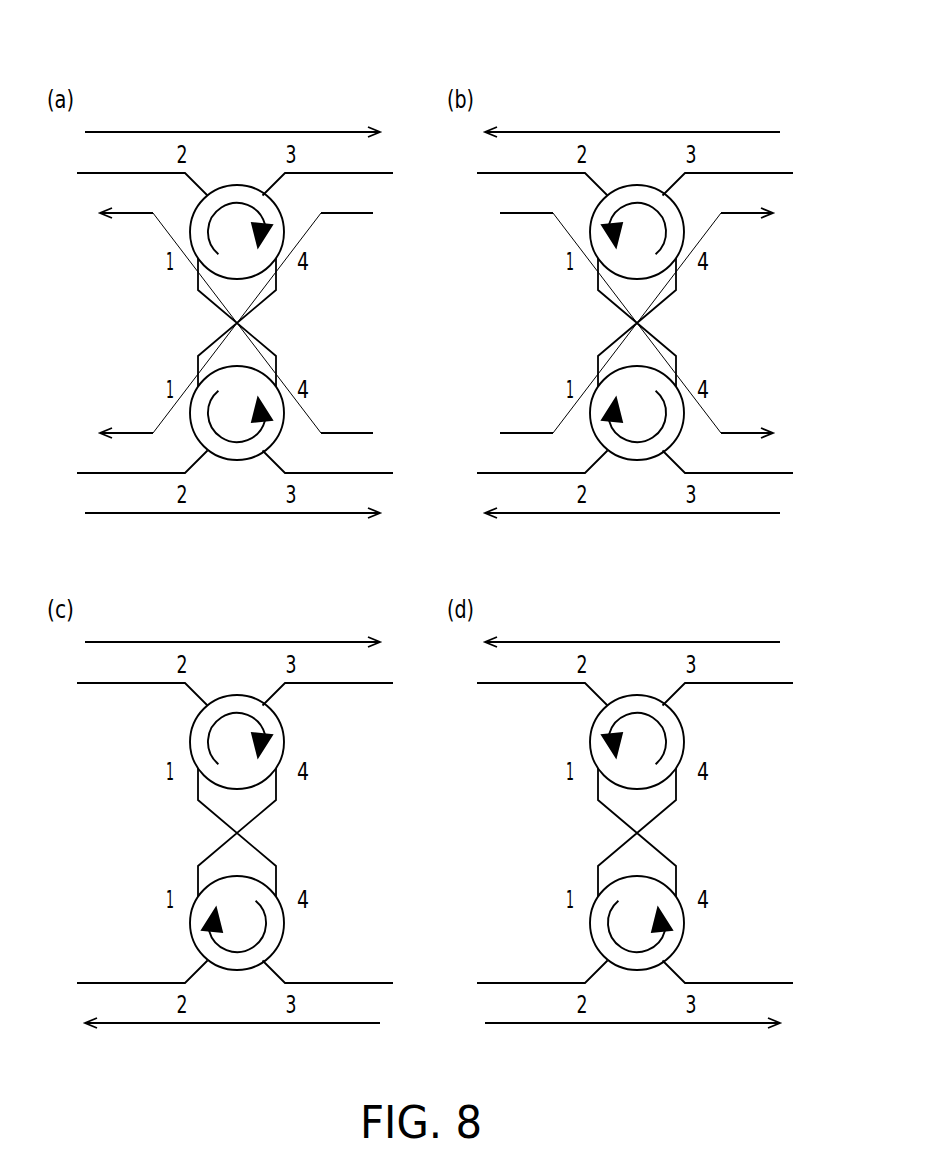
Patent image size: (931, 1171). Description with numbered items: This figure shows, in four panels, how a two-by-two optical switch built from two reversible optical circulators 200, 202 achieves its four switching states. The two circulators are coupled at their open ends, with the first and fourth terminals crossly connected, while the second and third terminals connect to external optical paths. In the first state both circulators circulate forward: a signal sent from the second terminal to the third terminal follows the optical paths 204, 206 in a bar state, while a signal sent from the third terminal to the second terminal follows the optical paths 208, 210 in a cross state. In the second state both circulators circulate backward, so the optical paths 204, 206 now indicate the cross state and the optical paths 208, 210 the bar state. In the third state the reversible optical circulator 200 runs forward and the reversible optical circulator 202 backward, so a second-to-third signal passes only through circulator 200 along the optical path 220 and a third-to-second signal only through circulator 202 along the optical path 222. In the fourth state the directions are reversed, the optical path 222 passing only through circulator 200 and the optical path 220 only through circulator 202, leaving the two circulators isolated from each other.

The reversible optical circulator 200 is at (469, 483).
The reversible optical circulator 202 is at (469, 672).
The optical path 204 is at (90, 243).
The optical path 206 is at (90, 404).
The optical path 208 is at (345, 213).
The optical path 210 is at (345, 433).
The optical path 220 is at (432, 832).
The optical path 222 is at (432, 832).